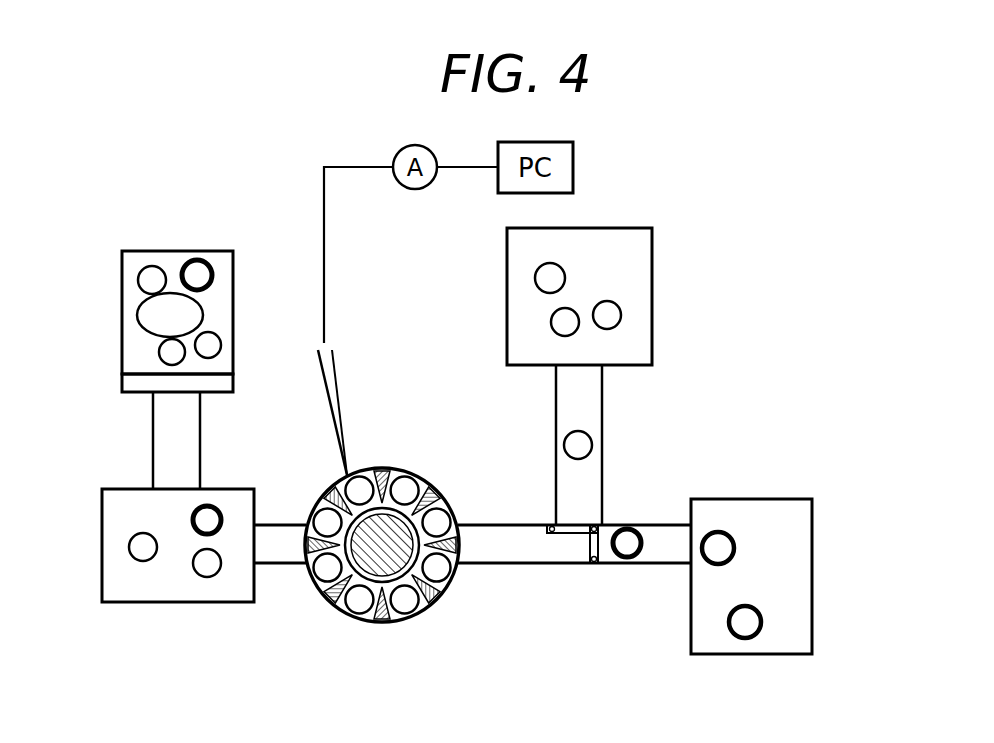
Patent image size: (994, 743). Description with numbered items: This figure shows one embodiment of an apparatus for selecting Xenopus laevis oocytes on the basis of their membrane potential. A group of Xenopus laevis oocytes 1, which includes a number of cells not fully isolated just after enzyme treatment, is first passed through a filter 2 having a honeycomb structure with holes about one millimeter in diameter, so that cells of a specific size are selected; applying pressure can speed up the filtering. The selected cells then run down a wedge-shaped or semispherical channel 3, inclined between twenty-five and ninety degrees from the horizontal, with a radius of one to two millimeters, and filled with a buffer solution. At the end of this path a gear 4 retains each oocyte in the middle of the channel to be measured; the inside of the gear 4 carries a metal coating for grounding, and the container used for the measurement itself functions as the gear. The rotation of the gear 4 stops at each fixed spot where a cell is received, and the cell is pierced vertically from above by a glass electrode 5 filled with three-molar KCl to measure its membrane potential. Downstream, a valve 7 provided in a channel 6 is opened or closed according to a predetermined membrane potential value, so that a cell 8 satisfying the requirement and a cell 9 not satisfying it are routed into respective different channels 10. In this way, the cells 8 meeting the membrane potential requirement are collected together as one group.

The group of Xenopus laevis oocytes 1 is at (215, 305).
The filter 2 is at (215, 385).
The channel 3 is at (182, 437).
The gear 4 is at (430, 481).
The glass electrode 5 is at (335, 382).
The channel 6 is at (486, 547).
The valve 7 is at (572, 535).
The cell satisfying the membrane potential requirement 8 is at (584, 443).
The cell not satisfying the requirement 9 is at (628, 558).
The channels 10 is at (657, 537).